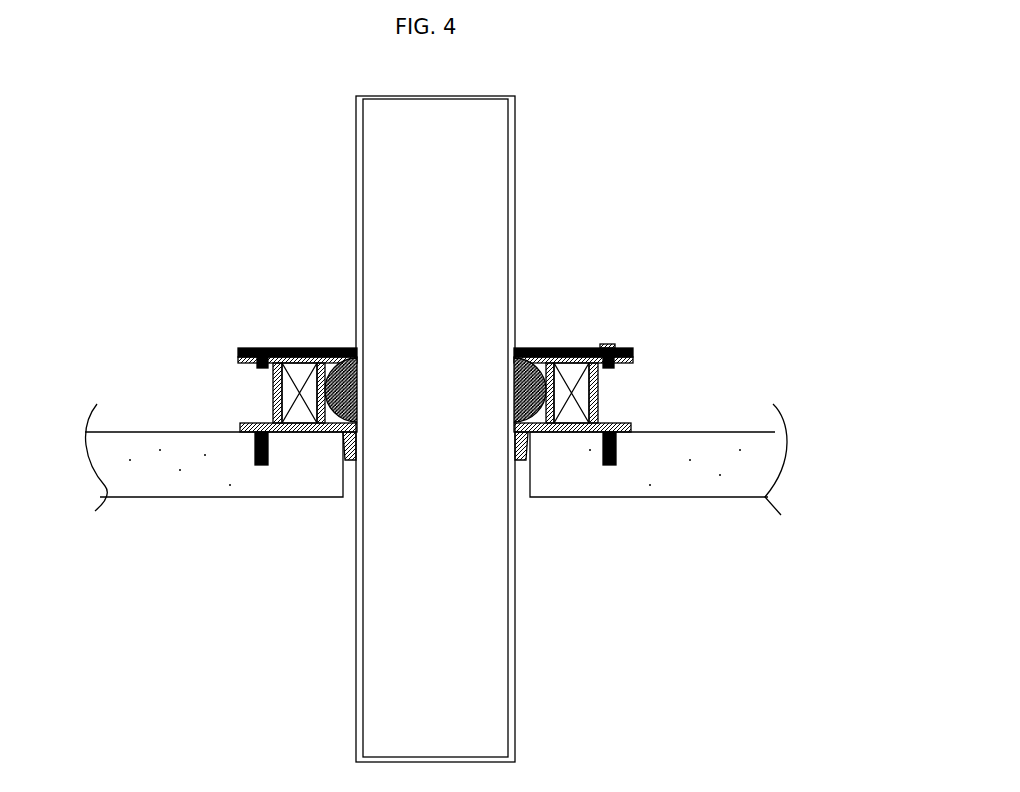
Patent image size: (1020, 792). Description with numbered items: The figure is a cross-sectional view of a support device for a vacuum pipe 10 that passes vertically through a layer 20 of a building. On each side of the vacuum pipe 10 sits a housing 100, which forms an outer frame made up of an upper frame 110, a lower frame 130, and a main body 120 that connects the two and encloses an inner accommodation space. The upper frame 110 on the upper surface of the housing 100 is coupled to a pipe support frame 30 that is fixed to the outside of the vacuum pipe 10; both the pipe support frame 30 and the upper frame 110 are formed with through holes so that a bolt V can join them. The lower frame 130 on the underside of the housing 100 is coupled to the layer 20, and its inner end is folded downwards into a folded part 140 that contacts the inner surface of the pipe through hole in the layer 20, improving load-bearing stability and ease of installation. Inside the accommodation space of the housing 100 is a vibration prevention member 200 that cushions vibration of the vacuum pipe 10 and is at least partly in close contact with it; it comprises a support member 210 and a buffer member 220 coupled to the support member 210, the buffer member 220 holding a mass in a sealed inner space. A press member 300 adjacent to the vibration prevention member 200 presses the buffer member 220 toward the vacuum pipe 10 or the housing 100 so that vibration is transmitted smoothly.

The vacuum pipe 10 is at (466, 237).
The layer 20 is at (652, 473).
The pipe support frame 30 is at (630, 350).
The housing 100 is at (268, 378).
The upper frame 110 is at (628, 368).
The main body 120 is at (598, 397).
The lower frame 130 is at (262, 465).
The folded part 140 is at (341, 445).
The vibration prevention member 200 is at (322, 364).
The support member 210 is at (553, 350).
The buffer member 220 is at (546, 350).
The press member 300 is at (284, 348).
The bolt V is at (258, 348).